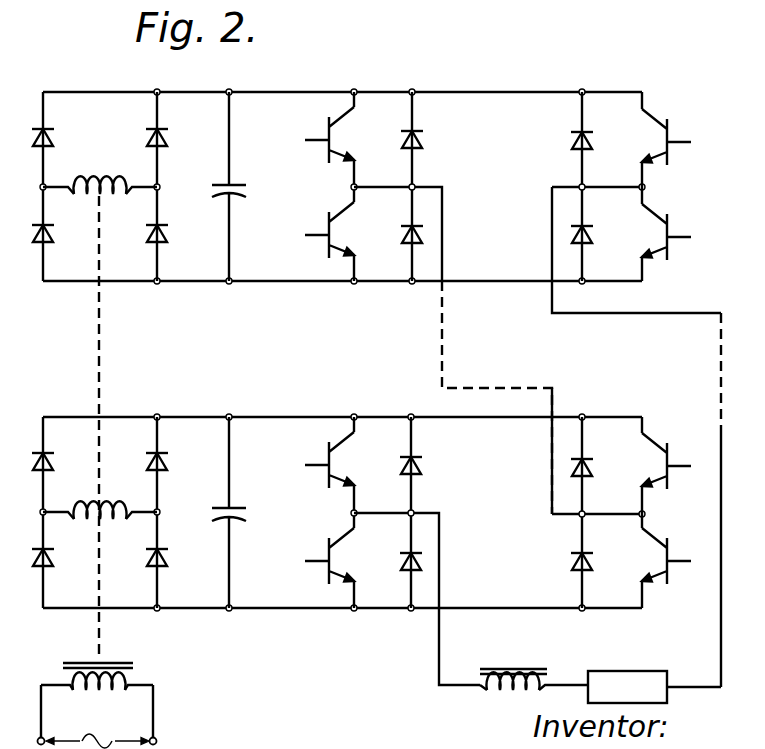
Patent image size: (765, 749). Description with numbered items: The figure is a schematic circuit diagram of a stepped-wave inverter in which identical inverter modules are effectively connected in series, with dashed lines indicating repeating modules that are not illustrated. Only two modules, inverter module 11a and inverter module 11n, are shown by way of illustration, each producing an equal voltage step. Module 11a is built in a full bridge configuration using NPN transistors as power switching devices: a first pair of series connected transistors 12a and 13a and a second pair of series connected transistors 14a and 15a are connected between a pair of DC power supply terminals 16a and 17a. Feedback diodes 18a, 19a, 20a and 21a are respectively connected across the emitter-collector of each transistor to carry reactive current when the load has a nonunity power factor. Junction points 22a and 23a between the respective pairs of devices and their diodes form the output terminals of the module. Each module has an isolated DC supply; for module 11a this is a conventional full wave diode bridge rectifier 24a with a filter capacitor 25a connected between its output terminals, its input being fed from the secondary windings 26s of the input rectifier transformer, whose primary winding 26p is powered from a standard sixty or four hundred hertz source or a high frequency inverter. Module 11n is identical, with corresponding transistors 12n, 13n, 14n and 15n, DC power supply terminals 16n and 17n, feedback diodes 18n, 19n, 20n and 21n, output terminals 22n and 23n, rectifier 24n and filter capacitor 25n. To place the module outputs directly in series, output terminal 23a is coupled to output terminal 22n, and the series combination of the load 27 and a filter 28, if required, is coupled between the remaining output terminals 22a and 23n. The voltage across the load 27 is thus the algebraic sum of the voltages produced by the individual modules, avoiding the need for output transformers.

The inverter module 11n is at (510, 185).
The inverter module 11a is at (512, 513).
The transistor 12n is at (328, 158).
The transistor 12a is at (327, 480).
The transistor 13n is at (328, 252).
The transistor 13a is at (327, 578).
The transistor 14n is at (670, 129).
The transistor 14a is at (670, 450).
The transistor 15n is at (670, 225).
The transistor 15a is at (670, 550).
The DC power supply terminal 16n is at (336, 92).
The DC power supply terminal 16a is at (306, 417).
The DC power supply terminal 17n is at (250, 283).
The DC power supply terminal 17a is at (246, 611).
The feedback diode 18n is at (424, 140).
The feedback diode 18a is at (424, 467).
The feedback diode 19n is at (404, 243).
The feedback diode 19a is at (402, 571).
The feedback diode 20n is at (590, 142).
The feedback diode 20a is at (592, 472).
The feedback diode 21n is at (586, 250).
The feedback diode 21a is at (589, 566).
The output terminal 22n is at (414, 186).
The output terminal 22a is at (413, 513).
The output terminal 23n is at (585, 186).
The output terminal 23a is at (575, 517).
The full wave diode bridge rectifier 24n is at (119, 151).
The full wave diode bridge rectifier 24a is at (139, 496).
The filter capacitor 25n is at (238, 183).
The filter capacitor 25a is at (220, 507).
The secondary winding 26s is at (102, 196).
The primary winding 26p is at (133, 683).
The load 27 is at (636, 670).
The filter 28 is at (490, 690).